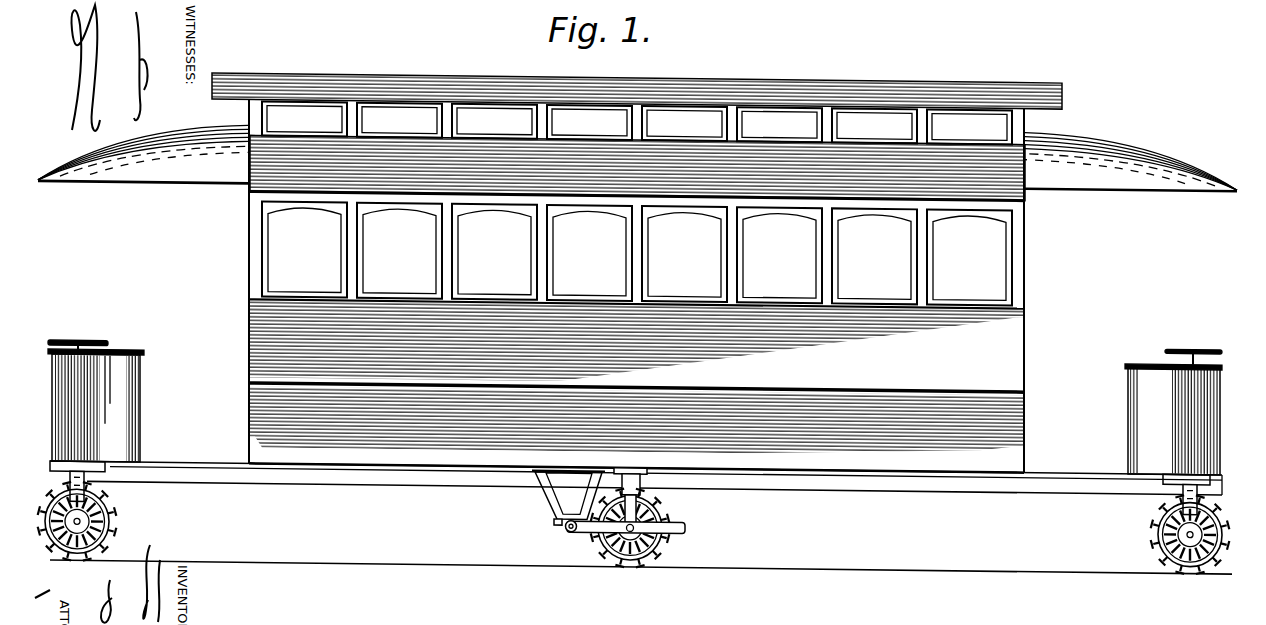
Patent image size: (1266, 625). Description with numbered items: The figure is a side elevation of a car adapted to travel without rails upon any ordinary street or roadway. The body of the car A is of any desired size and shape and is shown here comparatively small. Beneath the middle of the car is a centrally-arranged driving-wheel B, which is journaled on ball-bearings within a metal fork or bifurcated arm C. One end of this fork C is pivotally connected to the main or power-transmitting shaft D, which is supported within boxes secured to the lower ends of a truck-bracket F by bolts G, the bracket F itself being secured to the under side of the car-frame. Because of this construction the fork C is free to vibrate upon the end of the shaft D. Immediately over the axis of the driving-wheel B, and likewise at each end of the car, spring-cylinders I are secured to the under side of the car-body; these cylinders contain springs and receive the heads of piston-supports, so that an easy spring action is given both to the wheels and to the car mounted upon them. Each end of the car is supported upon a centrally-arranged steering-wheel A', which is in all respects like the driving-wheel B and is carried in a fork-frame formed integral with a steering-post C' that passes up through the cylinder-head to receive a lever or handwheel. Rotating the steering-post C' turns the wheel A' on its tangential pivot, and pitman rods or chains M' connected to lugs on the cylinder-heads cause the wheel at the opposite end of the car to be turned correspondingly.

The body of a car A is at (637, 273).
The steering-wheel A' is at (634, 528).
The driving-wheel B is at (637, 517).
The fork or bifurcated arm C is at (635, 530).
The steering-post C' is at (635, 402).
The main or power-transmitting shaft D is at (569, 530).
The truck-bracket F is at (545, 500).
The bolt G is at (556, 524).
The spring-cylinder I is at (68, 488).
The pitman rod or chain M' is at (636, 491).